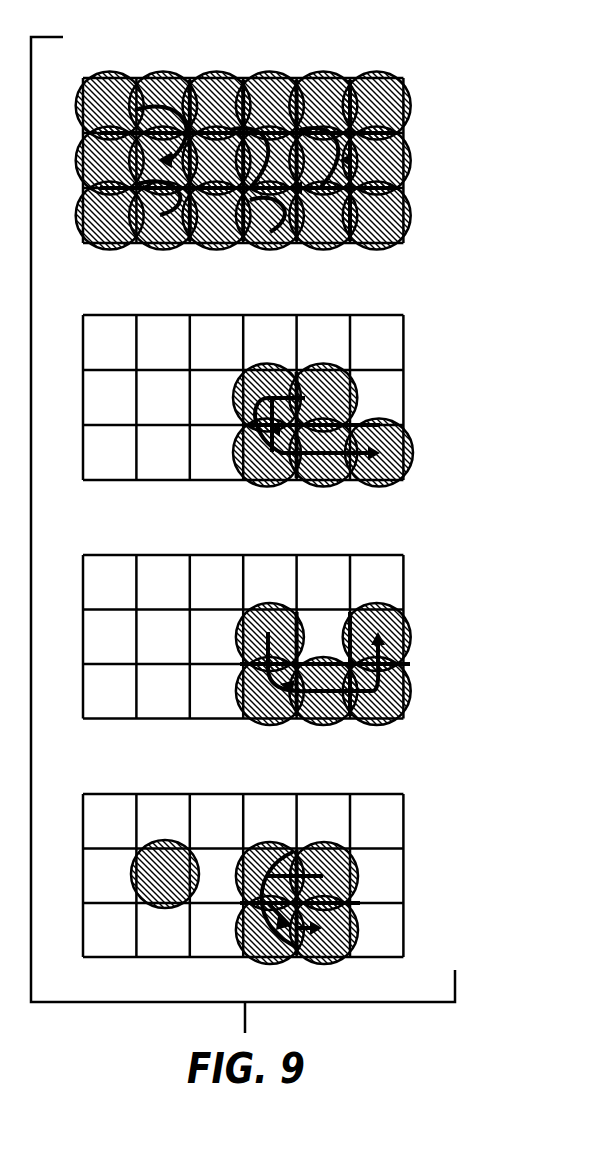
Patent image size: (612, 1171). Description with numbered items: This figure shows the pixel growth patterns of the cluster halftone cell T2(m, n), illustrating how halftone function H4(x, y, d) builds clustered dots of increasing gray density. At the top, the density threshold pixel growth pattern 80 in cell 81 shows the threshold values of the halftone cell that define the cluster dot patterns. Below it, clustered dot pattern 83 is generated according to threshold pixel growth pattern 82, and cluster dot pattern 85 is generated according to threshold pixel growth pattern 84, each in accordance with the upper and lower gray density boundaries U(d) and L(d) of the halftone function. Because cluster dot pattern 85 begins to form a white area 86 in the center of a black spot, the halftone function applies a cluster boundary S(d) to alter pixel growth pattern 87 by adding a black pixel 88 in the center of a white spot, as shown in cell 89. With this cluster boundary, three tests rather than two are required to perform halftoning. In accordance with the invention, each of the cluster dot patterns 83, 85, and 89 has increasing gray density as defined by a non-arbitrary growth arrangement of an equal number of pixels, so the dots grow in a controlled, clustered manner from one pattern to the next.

The density threshold pixel growth pattern 80 is at (318, 71).
The cell 81 is at (295, 137).
The threshold pixel growth pattern 82 is at (337, 490).
The clustered dot pattern 83 is at (298, 422).
The threshold pixel growth pattern 84 is at (330, 725).
The cluster dot pattern 85 is at (298, 661).
The white area 86 is at (324, 632).
The pixel growth pattern 87 is at (270, 848).
The black pixel 88 is at (165, 870).
The cell 89 is at (298, 854).